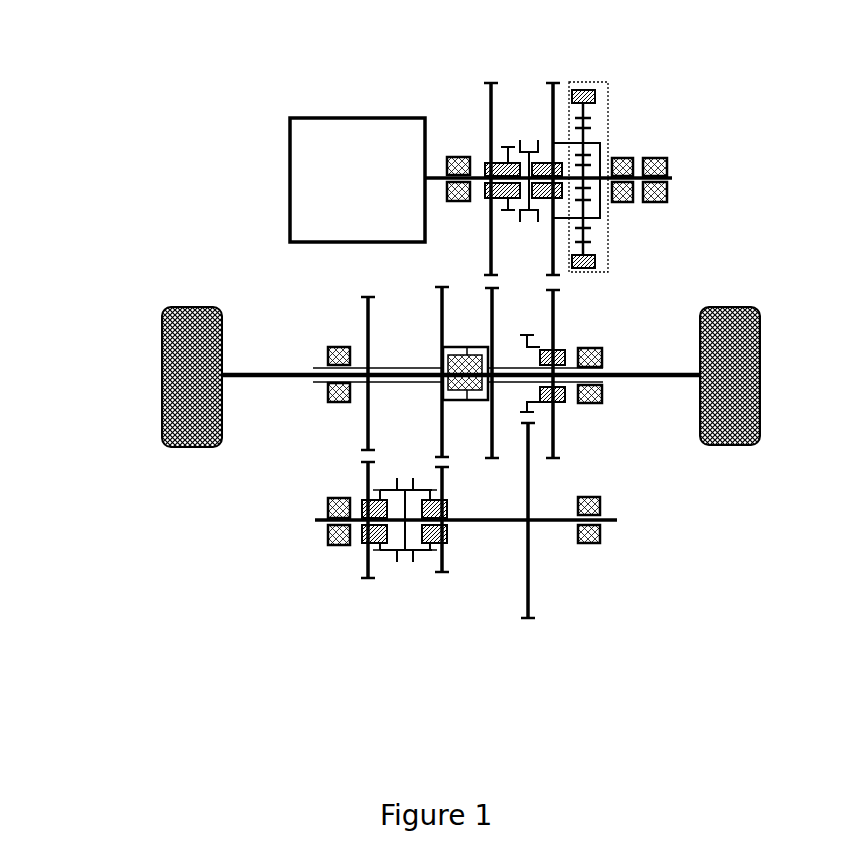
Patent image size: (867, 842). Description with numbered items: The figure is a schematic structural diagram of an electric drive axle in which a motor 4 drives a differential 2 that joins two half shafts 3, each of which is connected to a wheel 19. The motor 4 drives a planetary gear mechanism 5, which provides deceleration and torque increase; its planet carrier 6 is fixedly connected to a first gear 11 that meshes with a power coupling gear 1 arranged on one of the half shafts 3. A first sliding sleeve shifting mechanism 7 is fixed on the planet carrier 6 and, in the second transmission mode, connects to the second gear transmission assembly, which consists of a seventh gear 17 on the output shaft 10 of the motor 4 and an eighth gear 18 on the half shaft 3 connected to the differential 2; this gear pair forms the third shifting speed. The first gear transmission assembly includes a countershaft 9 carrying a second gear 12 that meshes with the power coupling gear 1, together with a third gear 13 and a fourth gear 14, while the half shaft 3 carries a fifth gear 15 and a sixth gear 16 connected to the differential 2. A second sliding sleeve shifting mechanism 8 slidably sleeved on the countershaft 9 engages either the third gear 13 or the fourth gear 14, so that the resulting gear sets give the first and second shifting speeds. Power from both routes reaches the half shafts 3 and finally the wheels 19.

The power coupling gear 1 is at (557, 318).
The differential 2 is at (462, 403).
The half shaft 3 is at (615, 380).
The motor 4 is at (333, 117).
The planetary gear mechanism 5 is at (605, 155).
The planet carrier 6 is at (601, 152).
The first sliding sleeve shifting mechanism 7 is at (525, 140).
The second sliding sleeve shifting mechanism 8 is at (407, 560).
The countershaft 9 is at (617, 522).
The output shaft 10 is at (672, 178).
The first gear 11 is at (555, 83).
The second gear 12 is at (532, 595).
The third gear 13 is at (445, 570).
The fourth gear 14 is at (365, 555).
The fifth gear 15 is at (437, 297).
The sixth gear 16 is at (365, 413).
The seventh gear 17 is at (488, 108).
The eighth gear 18 is at (487, 290).
The wheel 19 is at (197, 338).